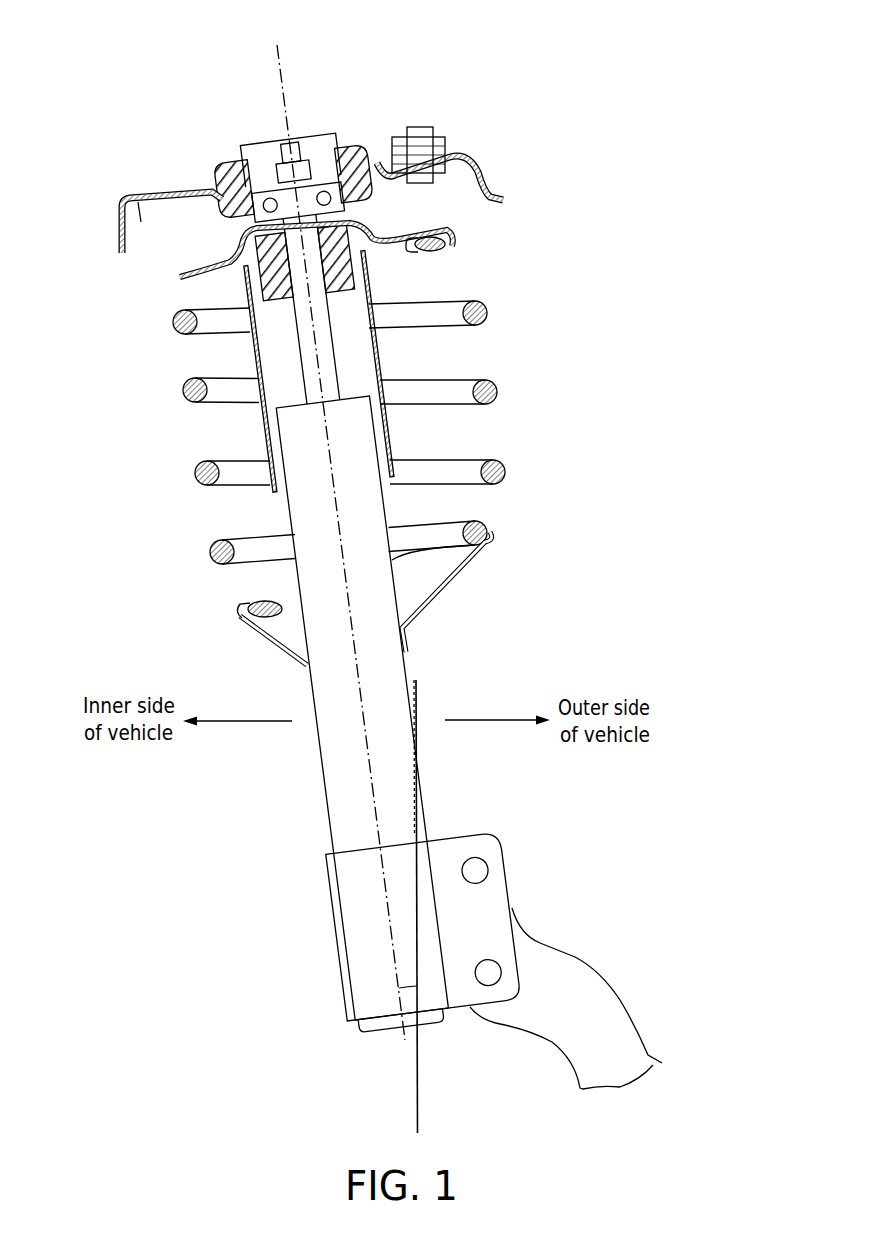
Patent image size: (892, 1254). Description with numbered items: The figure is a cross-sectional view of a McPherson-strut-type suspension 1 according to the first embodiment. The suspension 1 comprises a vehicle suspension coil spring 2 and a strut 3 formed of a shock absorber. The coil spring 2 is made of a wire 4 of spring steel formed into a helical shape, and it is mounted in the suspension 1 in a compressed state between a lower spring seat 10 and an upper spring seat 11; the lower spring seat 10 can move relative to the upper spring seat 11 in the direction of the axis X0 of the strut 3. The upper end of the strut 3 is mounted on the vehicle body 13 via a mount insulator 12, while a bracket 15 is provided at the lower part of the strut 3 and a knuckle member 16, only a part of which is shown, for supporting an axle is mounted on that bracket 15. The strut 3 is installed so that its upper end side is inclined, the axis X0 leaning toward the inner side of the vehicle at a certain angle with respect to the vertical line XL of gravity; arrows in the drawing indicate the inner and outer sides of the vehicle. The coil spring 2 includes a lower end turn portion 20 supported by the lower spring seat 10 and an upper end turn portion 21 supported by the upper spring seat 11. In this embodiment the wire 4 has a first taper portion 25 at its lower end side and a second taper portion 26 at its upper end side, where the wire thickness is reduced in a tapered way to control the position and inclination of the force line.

The suspension 1 is at (498, 50).
The coil spring 2 is at (495, 410).
The strut 3 is at (317, 744).
The wire 4 is at (489, 314).
The lower spring seat 10 is at (453, 583).
The upper spring seat 11 is at (403, 232).
The mount insulator 12 is at (358, 150).
The vehicle body 13 is at (482, 165).
The bracket 15 is at (500, 875).
The knuckle member 16 is at (603, 987).
The lower end turn portion 20 is at (275, 603).
The upper end turn portion 21 is at (416, 256).
The first taper portion 25 is at (245, 603).
The second taper portion 26 is at (448, 253).
The axis X0 is at (370, 777).
The vertical line XL is at (423, 695).